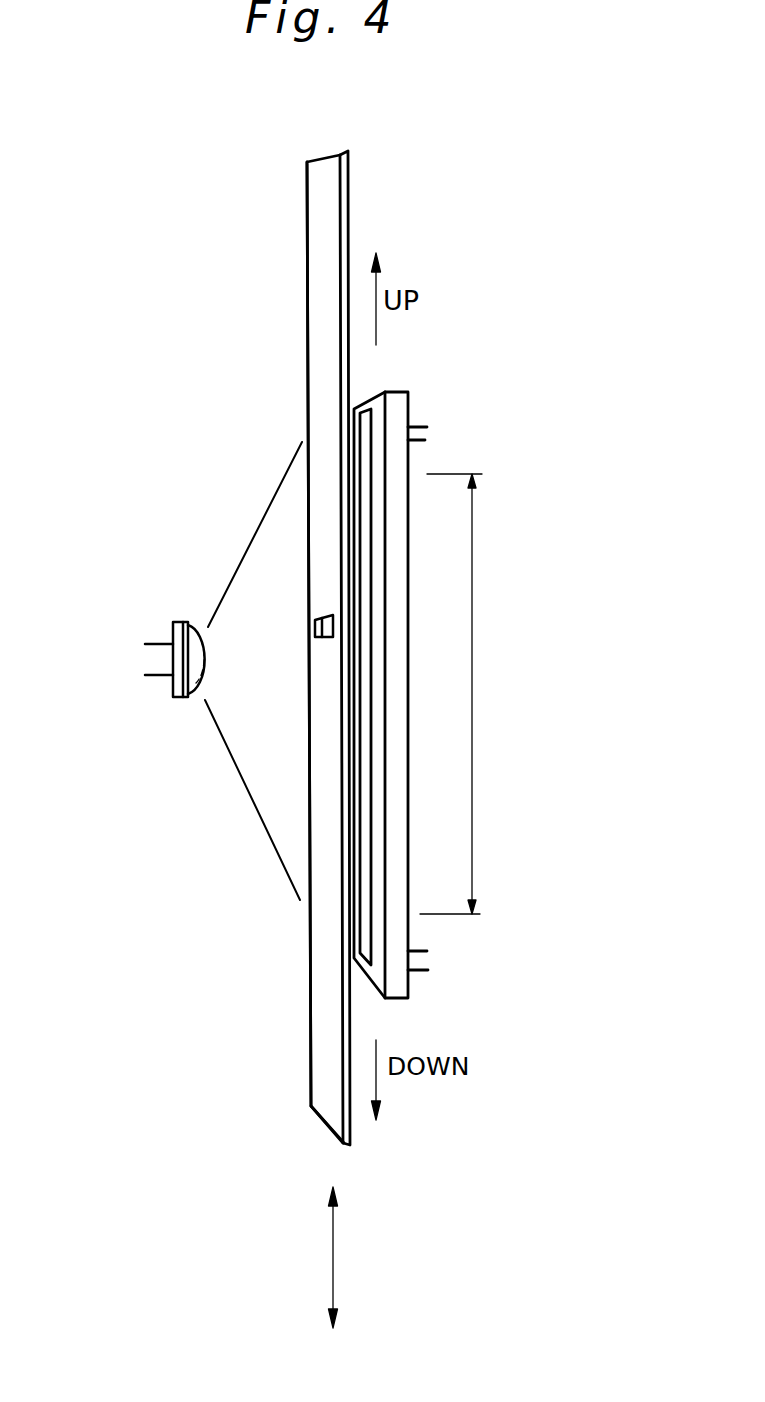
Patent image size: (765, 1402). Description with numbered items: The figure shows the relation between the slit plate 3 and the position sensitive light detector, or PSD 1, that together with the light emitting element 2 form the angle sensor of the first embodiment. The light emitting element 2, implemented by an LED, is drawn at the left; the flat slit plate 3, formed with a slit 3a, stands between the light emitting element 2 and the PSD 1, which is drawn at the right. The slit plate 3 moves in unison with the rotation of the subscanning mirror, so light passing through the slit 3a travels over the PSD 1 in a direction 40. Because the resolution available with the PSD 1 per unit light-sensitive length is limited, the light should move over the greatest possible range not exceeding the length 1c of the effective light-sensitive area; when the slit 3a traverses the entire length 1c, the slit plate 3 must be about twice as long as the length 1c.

The PSD 1 is at (408, 988).
The length of the effective light-sensitive area 1c is at (472, 698).
The light emitting element 2 is at (177, 620).
The slit plate 3 is at (325, 160).
The slit 3a is at (315, 632).
The direction 40 is at (333, 1265).